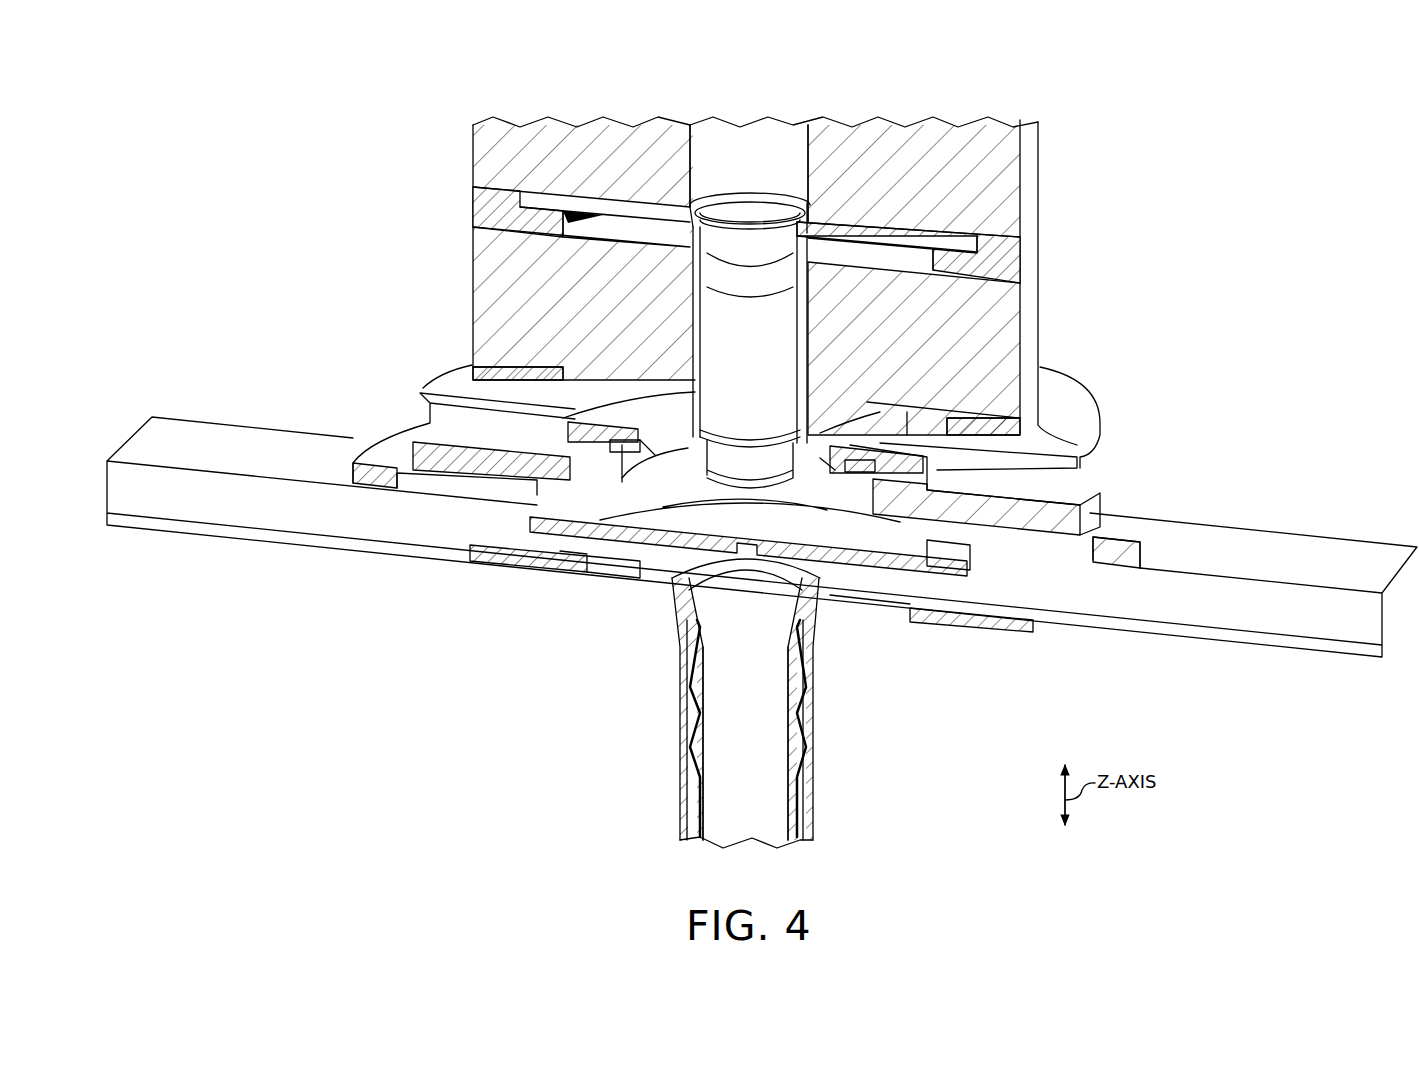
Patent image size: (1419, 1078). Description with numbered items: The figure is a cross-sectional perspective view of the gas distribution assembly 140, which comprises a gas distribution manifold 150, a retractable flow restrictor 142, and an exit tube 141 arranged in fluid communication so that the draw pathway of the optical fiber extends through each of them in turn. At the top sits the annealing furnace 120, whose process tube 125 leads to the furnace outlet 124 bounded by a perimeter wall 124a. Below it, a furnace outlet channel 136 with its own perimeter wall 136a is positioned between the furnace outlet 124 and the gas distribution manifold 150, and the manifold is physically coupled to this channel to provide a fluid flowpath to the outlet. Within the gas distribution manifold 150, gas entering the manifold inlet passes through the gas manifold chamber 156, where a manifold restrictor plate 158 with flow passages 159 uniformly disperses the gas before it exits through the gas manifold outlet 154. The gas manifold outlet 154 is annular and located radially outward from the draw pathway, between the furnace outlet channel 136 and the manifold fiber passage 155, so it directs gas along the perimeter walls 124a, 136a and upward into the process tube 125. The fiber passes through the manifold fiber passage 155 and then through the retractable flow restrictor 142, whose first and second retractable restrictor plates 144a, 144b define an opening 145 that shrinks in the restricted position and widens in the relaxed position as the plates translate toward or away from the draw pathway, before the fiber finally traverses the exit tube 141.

The annealing furnace 120 is at (896, 120).
The furnace outlet 124 is at (750, 205).
The process tube 125 is at (777, 140).
The perimeter wall of the furnace outlet 124a is at (703, 215).
The furnace outlet channel 136 is at (798, 362).
The perimeter wall of the furnace outlet channel 136a is at (782, 352).
The manifold fiber passage 155 is at (732, 447).
The gas manifold outlet 154 is at (827, 453).
The manifold restrictor plate 158 is at (615, 440).
The flow passage 159 is at (643, 447).
The gas distribution manifold 150 is at (468, 430).
The gas manifold chamber 156 is at (600, 512).
The first retractable restrictor plate 144a is at (632, 535).
The second retractable restrictor plate 144b is at (860, 557).
The gas distribution assembly 140 is at (1122, 410).
The retractable flow restrictor 142 is at (683, 560).
The exit tube 141 is at (680, 742).
The opening 145 is at (755, 565).